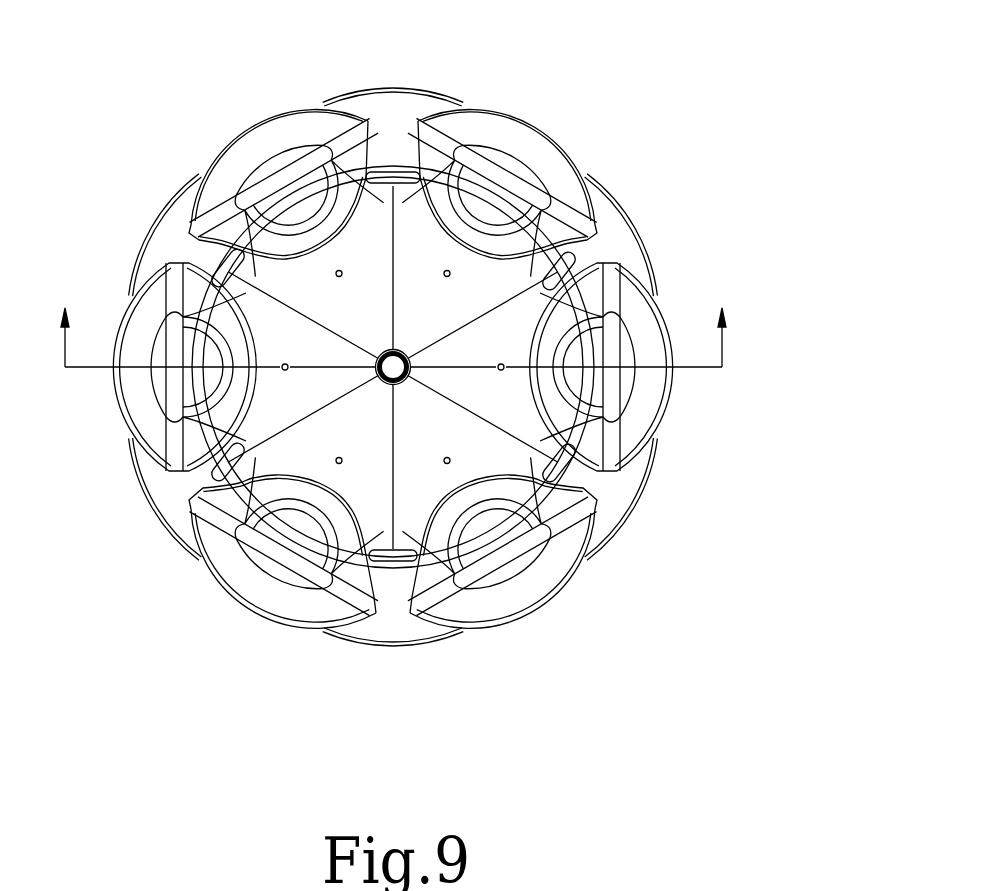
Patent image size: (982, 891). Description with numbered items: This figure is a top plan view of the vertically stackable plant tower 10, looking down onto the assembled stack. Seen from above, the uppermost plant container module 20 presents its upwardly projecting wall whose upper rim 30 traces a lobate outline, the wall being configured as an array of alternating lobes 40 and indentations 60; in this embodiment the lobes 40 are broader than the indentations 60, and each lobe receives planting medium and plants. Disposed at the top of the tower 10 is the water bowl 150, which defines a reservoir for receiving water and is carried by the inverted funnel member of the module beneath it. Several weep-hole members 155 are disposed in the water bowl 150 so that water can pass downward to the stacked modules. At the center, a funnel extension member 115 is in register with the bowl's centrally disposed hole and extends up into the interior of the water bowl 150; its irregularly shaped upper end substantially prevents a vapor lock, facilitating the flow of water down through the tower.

The vertically stackable plant tower 10 is at (700, 100).
The plant container module 20 is at (455, 98).
The upper rim 30 is at (575, 160).
The lobe 40 is at (388, 102).
The indentation 60 is at (645, 240).
The funnel extension member 115 is at (398, 348).
The water bowl 150 is at (197, 252).
The weep-hole member 155 is at (245, 187).